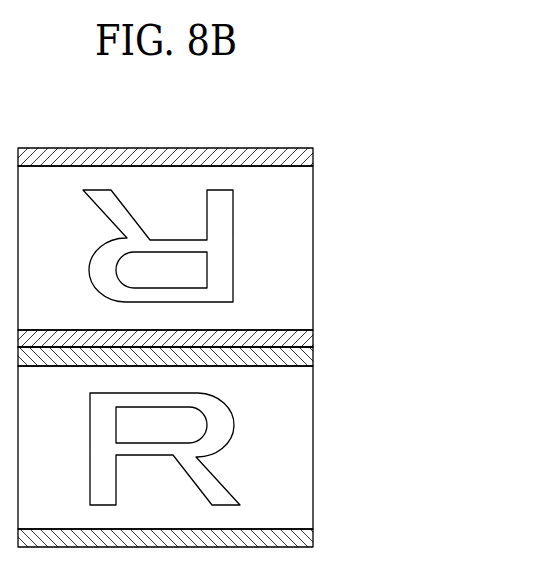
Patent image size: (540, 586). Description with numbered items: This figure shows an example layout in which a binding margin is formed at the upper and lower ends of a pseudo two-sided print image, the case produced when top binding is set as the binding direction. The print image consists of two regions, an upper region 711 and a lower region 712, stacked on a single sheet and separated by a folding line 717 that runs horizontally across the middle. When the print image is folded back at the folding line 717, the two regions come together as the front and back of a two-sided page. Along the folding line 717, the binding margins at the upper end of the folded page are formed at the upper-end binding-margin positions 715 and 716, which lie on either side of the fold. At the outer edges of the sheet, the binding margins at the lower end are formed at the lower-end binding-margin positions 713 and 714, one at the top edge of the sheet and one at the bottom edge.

The first substrate 711 is at (300, 240).
The second substrate 712 is at (300, 466).
The lower-end binding-margin position 713 is at (300, 157).
The lower-end binding-margin position 714 is at (303, 540).
The upper-end binding-margin position 715 is at (297, 330).
The upper-end binding-margin position 716 is at (297, 366).
The folding line 717 is at (302, 350).